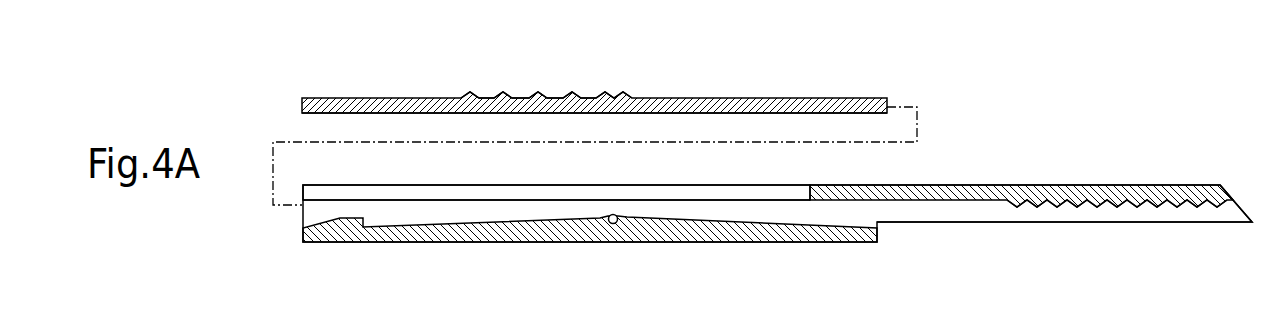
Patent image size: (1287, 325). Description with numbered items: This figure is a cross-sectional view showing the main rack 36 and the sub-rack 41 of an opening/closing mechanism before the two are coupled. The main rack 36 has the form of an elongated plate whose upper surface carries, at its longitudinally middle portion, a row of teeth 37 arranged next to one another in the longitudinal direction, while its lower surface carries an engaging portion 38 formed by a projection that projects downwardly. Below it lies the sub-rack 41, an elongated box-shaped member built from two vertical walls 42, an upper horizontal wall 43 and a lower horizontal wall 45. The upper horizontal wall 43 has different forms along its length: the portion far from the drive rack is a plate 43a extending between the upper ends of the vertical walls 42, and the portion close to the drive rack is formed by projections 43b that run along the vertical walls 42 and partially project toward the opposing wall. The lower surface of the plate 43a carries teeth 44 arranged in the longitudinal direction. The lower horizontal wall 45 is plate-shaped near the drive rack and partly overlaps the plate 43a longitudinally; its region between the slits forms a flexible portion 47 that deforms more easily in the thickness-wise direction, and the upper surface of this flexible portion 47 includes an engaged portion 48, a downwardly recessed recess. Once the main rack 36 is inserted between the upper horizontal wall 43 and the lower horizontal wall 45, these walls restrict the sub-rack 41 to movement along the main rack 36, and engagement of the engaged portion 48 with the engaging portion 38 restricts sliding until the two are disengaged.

The main rack 36 is at (302, 104).
The teeth 37 is at (553, 93).
The engaging portion 38 is at (613, 114).
The sub-rack 41 is at (1063, 185).
The vertical wall 42 is at (960, 210).
The upper horizontal wall 43 is at (1042, 136).
The plate 43a is at (1022, 185).
The projection 43b is at (795, 190).
The teeth 44 is at (1127, 208).
The lower horizontal wall 45 is at (590, 254).
The flexible portion 47 is at (690, 232).
The engaged portion 48 is at (622, 229).